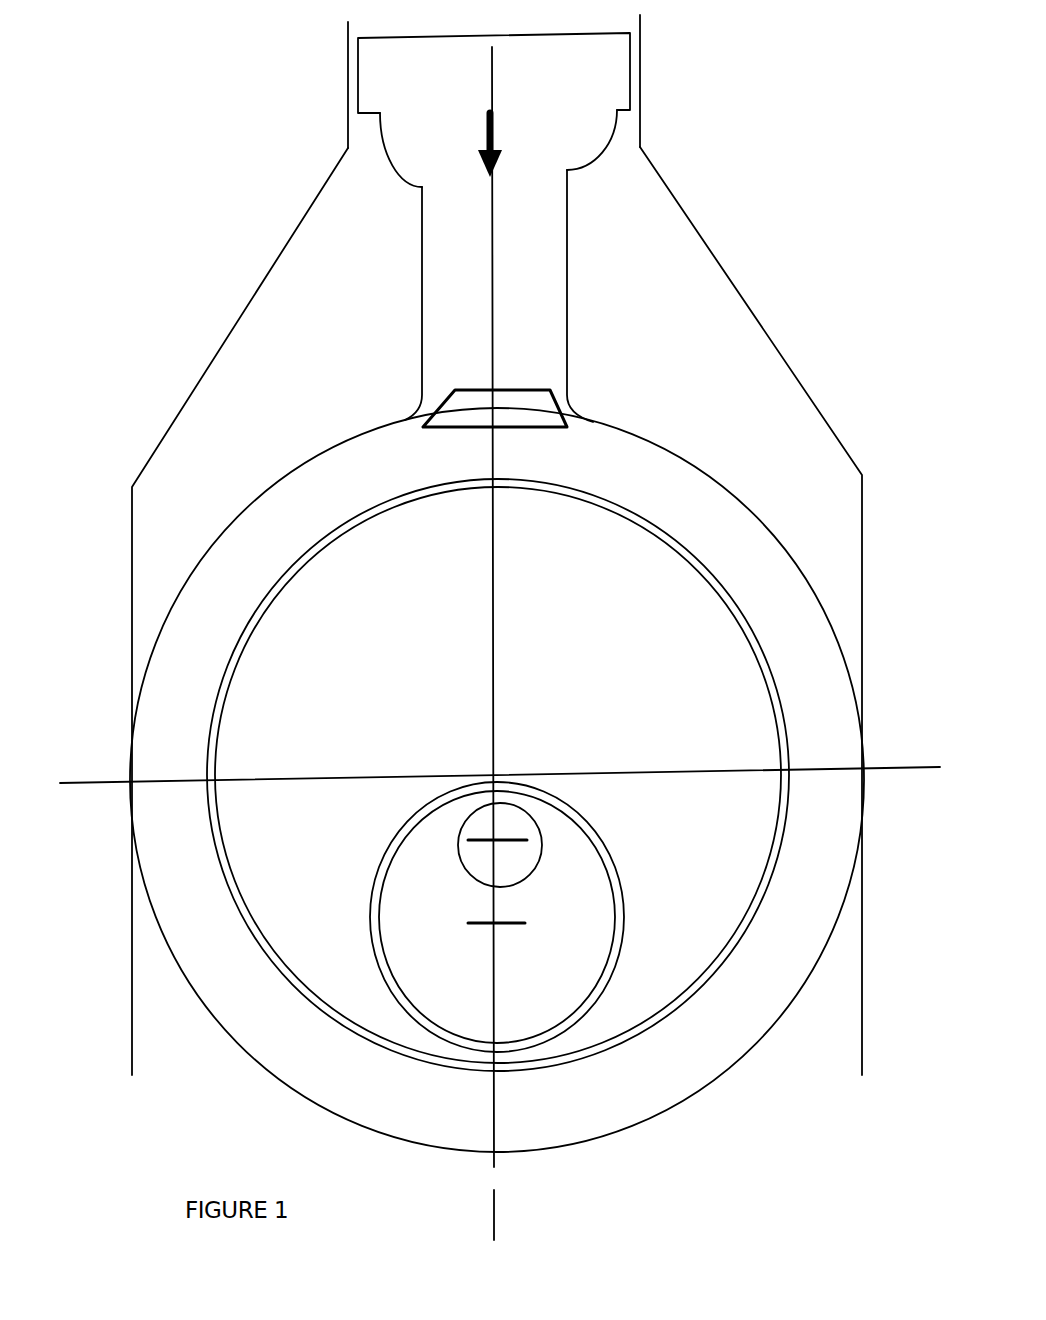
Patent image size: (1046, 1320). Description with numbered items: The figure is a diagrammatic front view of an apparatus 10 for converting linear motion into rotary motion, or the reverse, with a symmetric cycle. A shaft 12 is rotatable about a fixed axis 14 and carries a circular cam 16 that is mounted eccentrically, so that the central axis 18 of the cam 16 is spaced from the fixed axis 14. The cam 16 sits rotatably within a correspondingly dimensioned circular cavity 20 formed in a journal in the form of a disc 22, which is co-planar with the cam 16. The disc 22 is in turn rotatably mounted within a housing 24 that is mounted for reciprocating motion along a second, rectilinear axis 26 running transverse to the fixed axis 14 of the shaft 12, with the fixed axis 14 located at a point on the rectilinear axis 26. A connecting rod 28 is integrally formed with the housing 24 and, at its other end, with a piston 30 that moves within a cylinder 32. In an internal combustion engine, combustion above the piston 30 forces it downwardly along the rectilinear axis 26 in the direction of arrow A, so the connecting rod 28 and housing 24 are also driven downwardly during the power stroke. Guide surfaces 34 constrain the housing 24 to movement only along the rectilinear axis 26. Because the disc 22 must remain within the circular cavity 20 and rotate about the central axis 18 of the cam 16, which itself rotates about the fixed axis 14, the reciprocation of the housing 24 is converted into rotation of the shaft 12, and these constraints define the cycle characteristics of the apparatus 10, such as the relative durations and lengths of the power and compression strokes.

The apparatus 10 is at (707, 428).
The shaft 12 is at (515, 823).
The fixed axis 14 is at (490, 845).
The circular cam 16 is at (588, 975).
The central axis 18 is at (490, 928).
The circular cavity 20 is at (617, 892).
The disc 22 is at (650, 651).
The housing 24 is at (758, 563).
The rectilinear axis 26 is at (490, 562).
The connecting rod 28 is at (545, 247).
The piston 30 is at (602, 73).
The cylinder 32 is at (332, 110).
The guide surfaces 34 is at (115, 761).